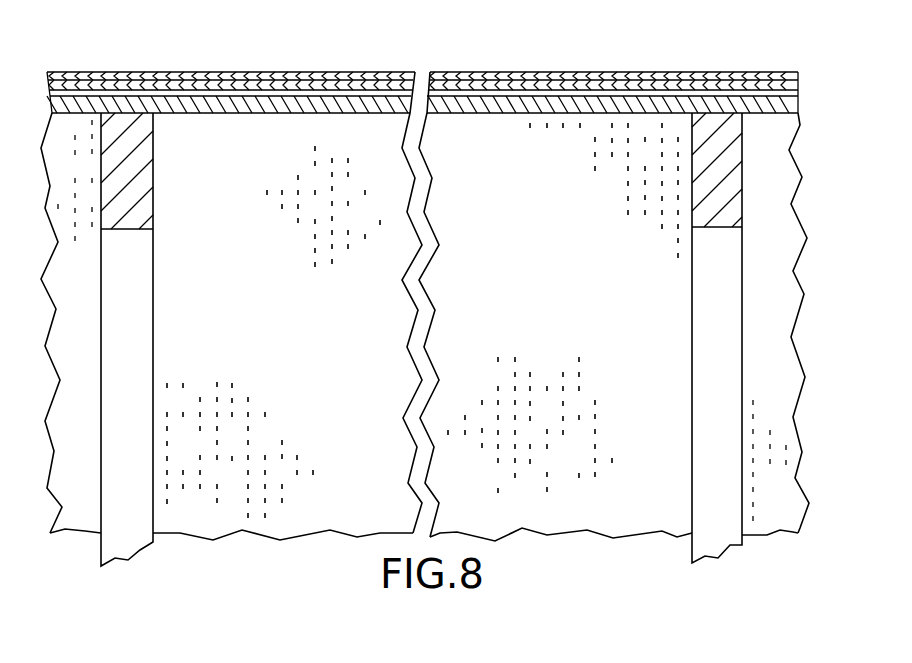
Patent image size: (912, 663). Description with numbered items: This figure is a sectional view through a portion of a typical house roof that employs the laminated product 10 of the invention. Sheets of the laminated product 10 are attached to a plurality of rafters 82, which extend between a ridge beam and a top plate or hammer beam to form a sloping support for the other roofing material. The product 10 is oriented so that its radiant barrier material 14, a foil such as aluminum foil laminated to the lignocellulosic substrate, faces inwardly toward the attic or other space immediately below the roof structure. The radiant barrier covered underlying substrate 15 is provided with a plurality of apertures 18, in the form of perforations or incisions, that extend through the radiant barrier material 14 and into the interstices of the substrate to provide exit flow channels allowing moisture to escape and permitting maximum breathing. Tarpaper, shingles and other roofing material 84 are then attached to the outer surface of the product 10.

The laminated product 10 is at (768, 114).
The radiant barrier material 14 is at (210, 118).
The laminated radiant barrier covered underlying substrate 15 is at (800, 97).
The apertures 18 is at (314, 263).
The rafters 82 is at (152, 303).
The roofing material 84 is at (247, 70).